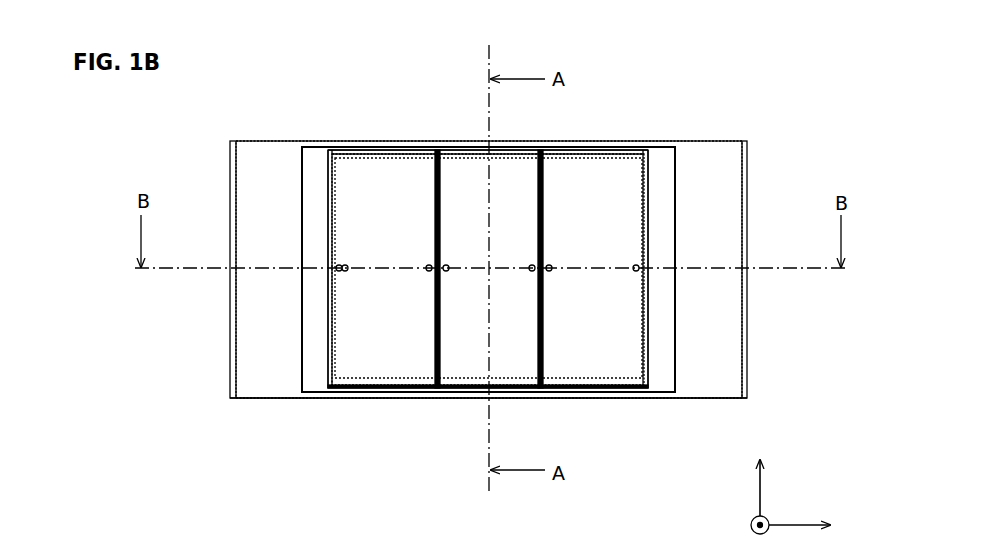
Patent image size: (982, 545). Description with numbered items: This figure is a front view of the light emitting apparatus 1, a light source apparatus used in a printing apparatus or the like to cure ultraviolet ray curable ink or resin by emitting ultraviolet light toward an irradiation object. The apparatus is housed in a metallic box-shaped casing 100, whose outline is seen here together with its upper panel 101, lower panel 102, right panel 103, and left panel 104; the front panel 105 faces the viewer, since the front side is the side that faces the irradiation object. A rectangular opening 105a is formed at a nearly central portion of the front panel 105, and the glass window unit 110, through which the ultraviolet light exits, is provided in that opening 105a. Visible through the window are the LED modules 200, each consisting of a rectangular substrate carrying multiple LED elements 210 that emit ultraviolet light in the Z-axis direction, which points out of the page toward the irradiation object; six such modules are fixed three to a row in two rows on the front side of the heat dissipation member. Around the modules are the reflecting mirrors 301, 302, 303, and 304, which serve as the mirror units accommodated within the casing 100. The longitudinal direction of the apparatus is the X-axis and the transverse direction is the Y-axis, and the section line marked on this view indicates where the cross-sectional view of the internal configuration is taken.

The light emitting apparatus 1 is at (684, 56).
The casing 100 is at (722, 140).
The upper panel 101 is at (314, 144).
The lower panel 102 is at (313, 398).
The right panel 103 is at (750, 175).
The left panel 104 is at (230, 172).
The front panel 105 is at (253, 368).
The window unit 110 is at (651, 437).
The opening 105a is at (644, 392).
The LED module 200 is at (473, 147).
The LED element 210 is at (433, 148).
The reflecting mirror 301 is at (592, 148).
The reflecting mirror 302 is at (422, 382).
The reflecting mirror 303 is at (640, 330).
The reflecting mirror 304 is at (335, 333).